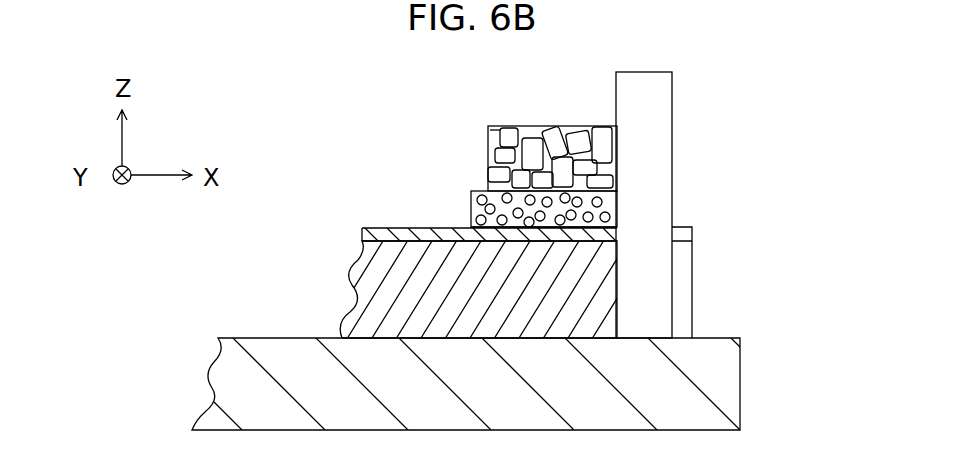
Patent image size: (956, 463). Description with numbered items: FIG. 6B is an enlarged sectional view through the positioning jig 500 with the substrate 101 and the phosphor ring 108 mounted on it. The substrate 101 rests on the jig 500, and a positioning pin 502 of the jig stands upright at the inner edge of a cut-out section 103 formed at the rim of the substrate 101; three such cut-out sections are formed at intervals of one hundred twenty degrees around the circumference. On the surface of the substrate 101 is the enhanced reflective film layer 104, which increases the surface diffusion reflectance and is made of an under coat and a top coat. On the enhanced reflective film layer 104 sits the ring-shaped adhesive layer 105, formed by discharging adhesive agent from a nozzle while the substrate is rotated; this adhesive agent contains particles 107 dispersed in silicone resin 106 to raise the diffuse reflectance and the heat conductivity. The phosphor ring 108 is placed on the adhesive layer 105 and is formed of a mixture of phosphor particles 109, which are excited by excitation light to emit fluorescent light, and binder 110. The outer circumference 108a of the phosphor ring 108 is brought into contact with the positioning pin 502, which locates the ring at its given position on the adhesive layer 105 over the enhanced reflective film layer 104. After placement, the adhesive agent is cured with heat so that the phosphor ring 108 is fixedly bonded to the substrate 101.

The positioning jig 500 is at (742, 388).
The substrate 101 is at (355, 285).
The enhanced reflective film layer 104 is at (363, 235).
The adhesive layer 105 is at (458, 213).
The silicone resin 106 is at (461, 186).
The particles 107 is at (472, 208).
The phosphor ring 108 is at (572, 127).
The outer circumference 108a is at (617, 152).
The phosphor particles 109 is at (635, 126).
The binder 110 is at (497, 137).
The positioning pin 502 is at (673, 185).
The cut-out section 103 is at (693, 288).